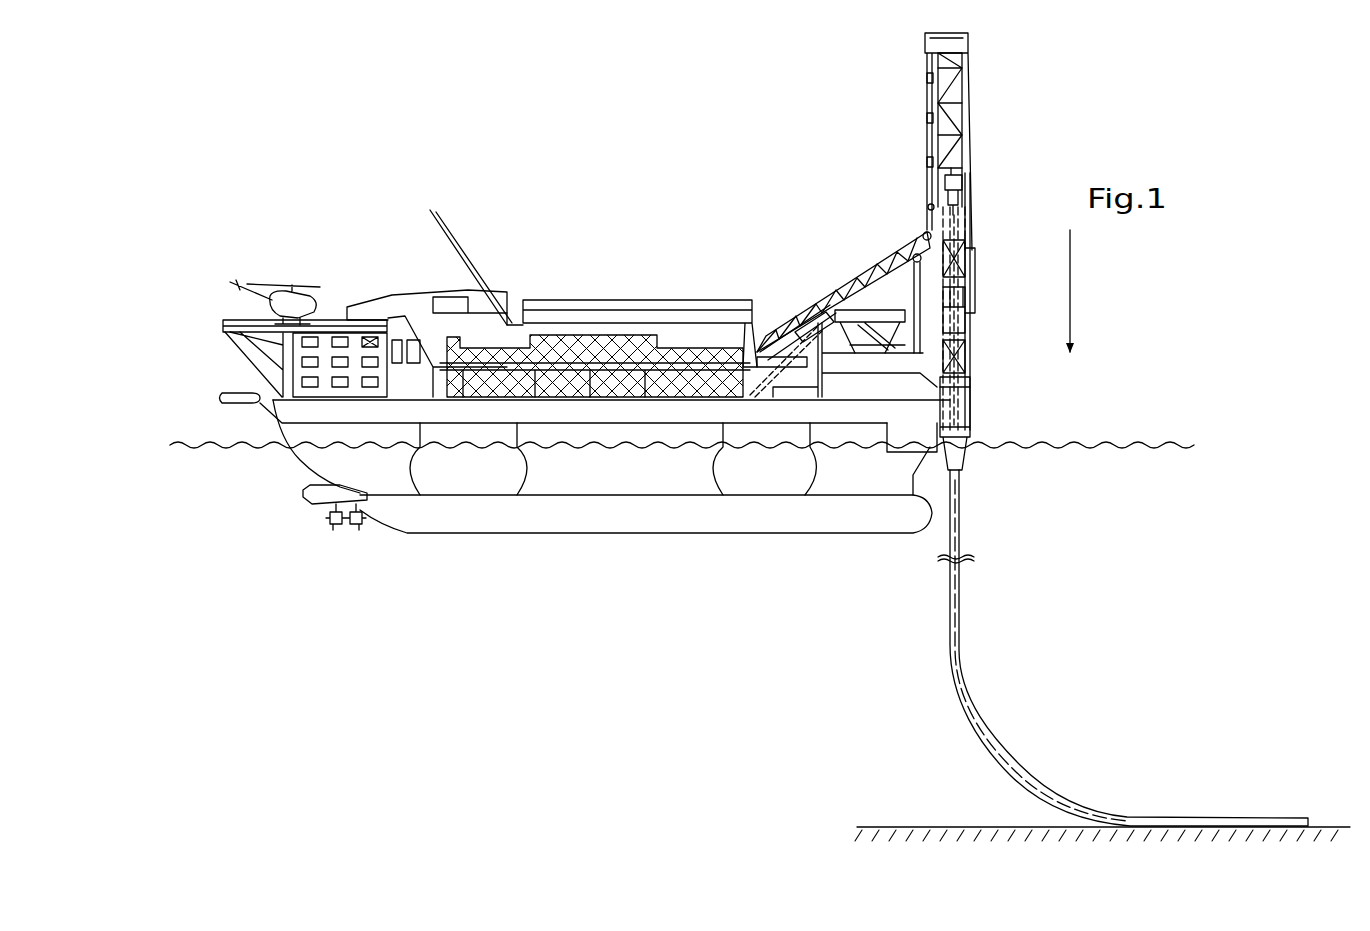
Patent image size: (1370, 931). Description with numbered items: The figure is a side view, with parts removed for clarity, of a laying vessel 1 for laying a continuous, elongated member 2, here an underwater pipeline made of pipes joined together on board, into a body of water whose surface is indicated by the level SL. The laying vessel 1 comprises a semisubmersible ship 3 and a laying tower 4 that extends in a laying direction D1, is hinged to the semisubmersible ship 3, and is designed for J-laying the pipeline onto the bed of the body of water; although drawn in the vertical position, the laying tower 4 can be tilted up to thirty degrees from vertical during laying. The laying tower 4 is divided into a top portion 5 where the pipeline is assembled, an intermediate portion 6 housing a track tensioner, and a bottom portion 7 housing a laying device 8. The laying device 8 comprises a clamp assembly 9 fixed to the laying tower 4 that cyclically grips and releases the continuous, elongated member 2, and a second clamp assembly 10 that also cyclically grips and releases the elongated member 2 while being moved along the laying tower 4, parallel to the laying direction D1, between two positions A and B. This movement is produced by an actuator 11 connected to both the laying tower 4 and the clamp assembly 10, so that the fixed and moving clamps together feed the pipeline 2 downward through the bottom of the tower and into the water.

The laying vessel 1 is at (658, 349).
The continuous, elongated member 2 is at (953, 619).
The semisubmersible ship 3 is at (573, 542).
The laying tower 4 is at (1027, 176).
The top portion 5 is at (992, 106).
The intermediate portion 6 is at (978, 185).
The bottom portion 7 is at (1002, 341).
The laying device 8 is at (980, 365).
The clamp assembly 9 is at (970, 384).
The clamp assembly 10 is at (969, 236).
The actuator 11 is at (971, 274).
The position A is at (982, 247).
The position B is at (982, 307).
The laying direction D1 is at (1070, 306).
The level of the body of water SL is at (1092, 438).